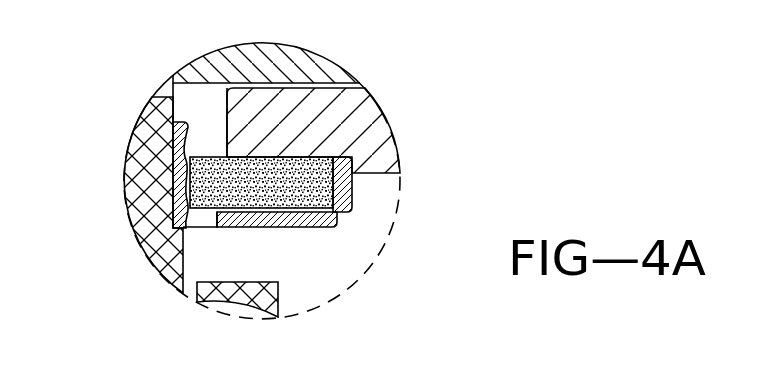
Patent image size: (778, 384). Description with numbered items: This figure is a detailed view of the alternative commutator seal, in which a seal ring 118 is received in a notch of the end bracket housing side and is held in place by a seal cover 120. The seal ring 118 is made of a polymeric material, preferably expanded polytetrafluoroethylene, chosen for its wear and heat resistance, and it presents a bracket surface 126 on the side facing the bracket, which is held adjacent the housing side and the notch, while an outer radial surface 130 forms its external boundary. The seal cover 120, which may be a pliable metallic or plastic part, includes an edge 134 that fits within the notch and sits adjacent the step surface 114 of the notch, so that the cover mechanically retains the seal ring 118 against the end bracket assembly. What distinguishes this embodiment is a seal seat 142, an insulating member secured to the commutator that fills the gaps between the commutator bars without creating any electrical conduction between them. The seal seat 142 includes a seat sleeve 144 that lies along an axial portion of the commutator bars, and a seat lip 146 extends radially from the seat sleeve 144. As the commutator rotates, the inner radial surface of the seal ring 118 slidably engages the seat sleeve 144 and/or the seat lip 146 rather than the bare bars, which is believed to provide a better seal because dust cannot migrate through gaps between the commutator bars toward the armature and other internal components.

The step surface 114 is at (352, 157).
The seal ring 118 is at (328, 203).
The seal cover 120 is at (264, 229).
The bracket surface 126 is at (210, 157).
The outer radial surface 130 is at (303, 203).
The edge 134 is at (318, 228).
The seal seat 142 is at (178, 206).
The seat sleeve 144 is at (178, 159).
The seat lip 146 is at (203, 229).